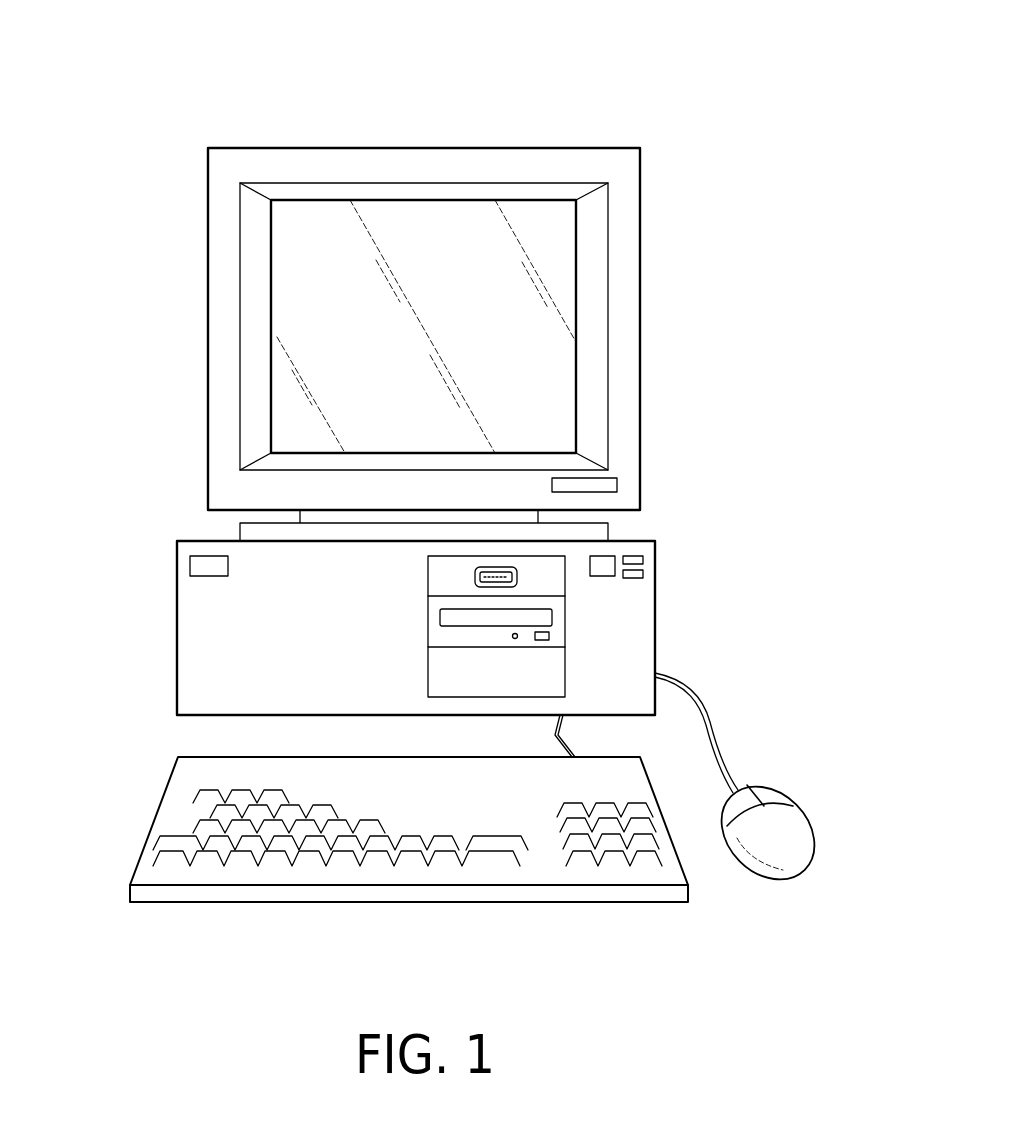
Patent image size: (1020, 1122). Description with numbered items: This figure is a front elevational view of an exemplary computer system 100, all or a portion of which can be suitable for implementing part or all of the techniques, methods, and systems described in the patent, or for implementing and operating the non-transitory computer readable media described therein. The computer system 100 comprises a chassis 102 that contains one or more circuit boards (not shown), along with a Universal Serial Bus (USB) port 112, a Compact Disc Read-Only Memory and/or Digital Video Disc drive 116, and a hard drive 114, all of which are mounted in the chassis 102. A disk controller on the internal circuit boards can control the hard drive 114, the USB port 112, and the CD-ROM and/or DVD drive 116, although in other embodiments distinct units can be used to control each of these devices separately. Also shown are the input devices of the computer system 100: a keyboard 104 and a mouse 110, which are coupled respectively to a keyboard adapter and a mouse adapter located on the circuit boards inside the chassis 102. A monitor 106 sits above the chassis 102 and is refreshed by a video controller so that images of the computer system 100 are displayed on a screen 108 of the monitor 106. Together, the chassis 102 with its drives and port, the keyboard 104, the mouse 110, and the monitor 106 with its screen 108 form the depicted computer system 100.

The computer system 100 is at (629, 120).
The chassis 102 is at (177, 628).
The keyboard 104 is at (155, 812).
The monitor 106 is at (296, 148).
The screen 108 is at (327, 330).
The mouse 110 is at (790, 820).
The Universal Serial Bus (USB) port 112 is at (517, 573).
The hard drive 114 is at (553, 670).
The Compact Disc Read-Only Memory (CD-ROM) and/or Digital Video Disc (DVD) drive 116 is at (552, 626).